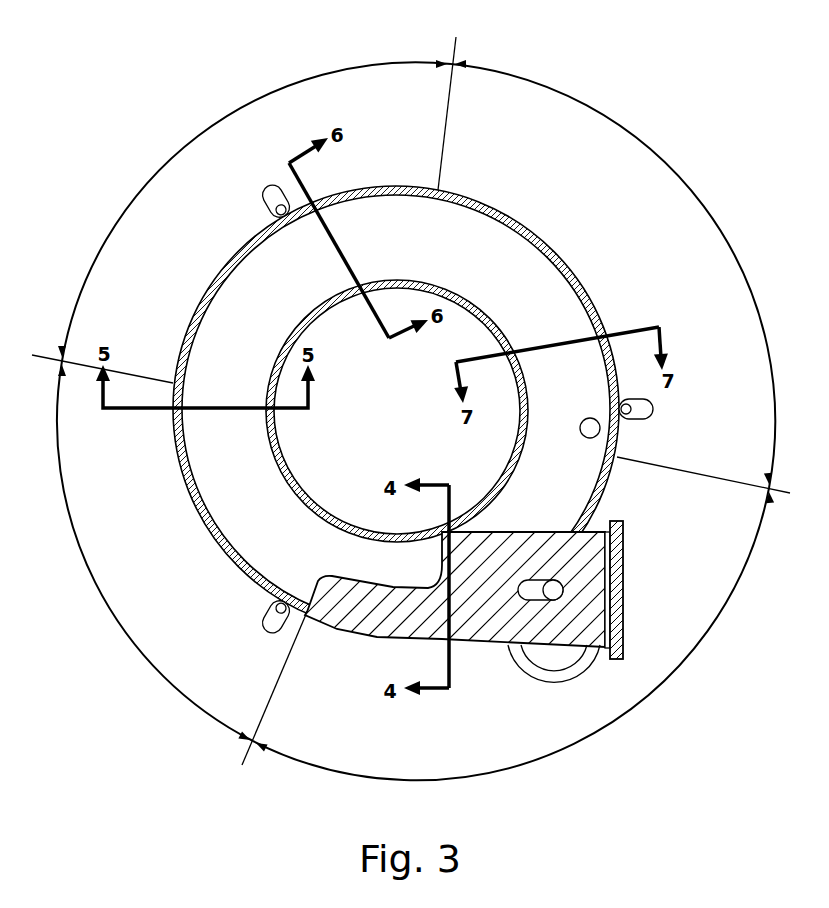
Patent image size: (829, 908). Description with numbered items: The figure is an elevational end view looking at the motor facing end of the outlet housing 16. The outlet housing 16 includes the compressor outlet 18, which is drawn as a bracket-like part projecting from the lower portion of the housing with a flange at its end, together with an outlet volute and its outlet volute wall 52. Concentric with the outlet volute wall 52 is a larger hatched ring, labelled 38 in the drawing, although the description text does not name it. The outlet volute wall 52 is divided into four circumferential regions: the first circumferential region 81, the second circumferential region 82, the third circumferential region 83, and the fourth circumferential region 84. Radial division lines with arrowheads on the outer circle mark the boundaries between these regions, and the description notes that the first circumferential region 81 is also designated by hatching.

The outlet housing 16 is at (412, 395).
The compressor outlet 18 is at (623, 565).
The outer ring 38 is at (394, 172).
The outlet volute wall 52 is at (568, 263).
The first circumferential region 81 is at (700, 655).
The second circumferential region 82 is at (112, 618).
The third circumferential region 83 is at (140, 188).
The fourth circumferential region 84 is at (657, 152).